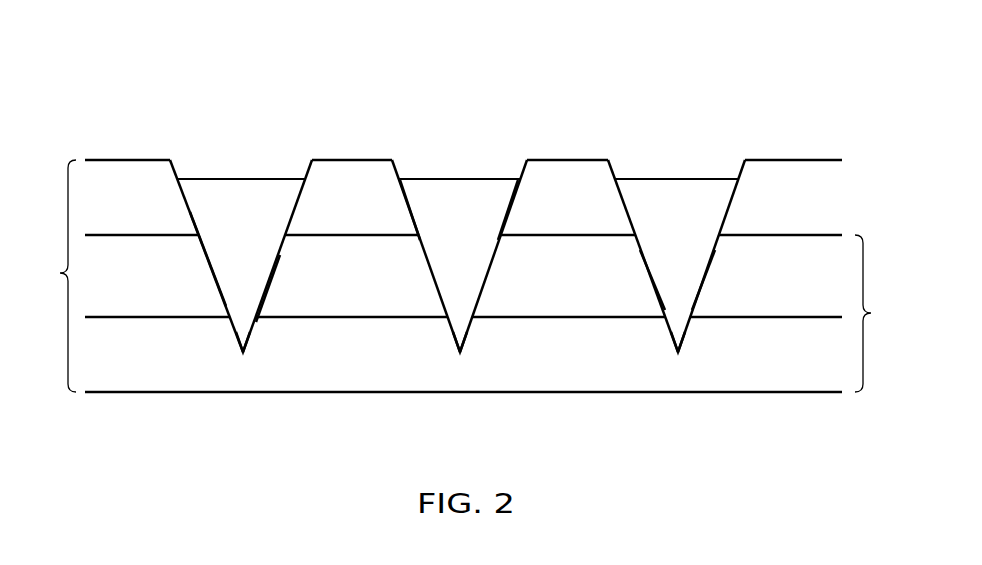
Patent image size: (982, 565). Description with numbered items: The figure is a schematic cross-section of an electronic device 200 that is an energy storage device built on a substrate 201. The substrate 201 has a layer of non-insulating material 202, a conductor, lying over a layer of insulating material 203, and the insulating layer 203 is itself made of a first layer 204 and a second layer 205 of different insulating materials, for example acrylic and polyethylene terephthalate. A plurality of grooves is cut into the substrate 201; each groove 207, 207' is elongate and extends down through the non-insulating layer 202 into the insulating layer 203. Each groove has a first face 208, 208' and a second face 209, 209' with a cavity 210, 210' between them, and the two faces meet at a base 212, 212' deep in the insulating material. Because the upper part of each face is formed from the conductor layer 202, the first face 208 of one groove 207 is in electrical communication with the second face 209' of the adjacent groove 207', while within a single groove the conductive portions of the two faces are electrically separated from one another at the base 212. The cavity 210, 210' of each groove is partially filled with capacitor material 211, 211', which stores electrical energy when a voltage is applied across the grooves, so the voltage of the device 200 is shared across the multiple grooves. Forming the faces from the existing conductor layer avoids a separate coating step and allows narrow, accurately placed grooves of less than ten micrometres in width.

The electronic device 200 is at (588, 43).
The substrate 201 is at (40, 276).
The layer of non-insulating material 202 is at (463, 197).
The layer of insulating material 203 is at (890, 313).
The first layer 204 is at (463, 290).
The second layer 205 is at (463, 371).
The groove 207 is at (412, 225).
The groove 207' is at (190, 225).
The first face 208 is at (371, 210).
The first face 208' is at (184, 330).
The second face 209 is at (544, 210).
The second face 209' is at (305, 288).
The cavity 210 is at (459, 120).
The cavity 210' is at (241, 120).
The capacitor material 211 is at (509, 225).
The capacitor material 211' is at (293, 225).
The base 212 is at (482, 391).
The base 212' is at (267, 390).